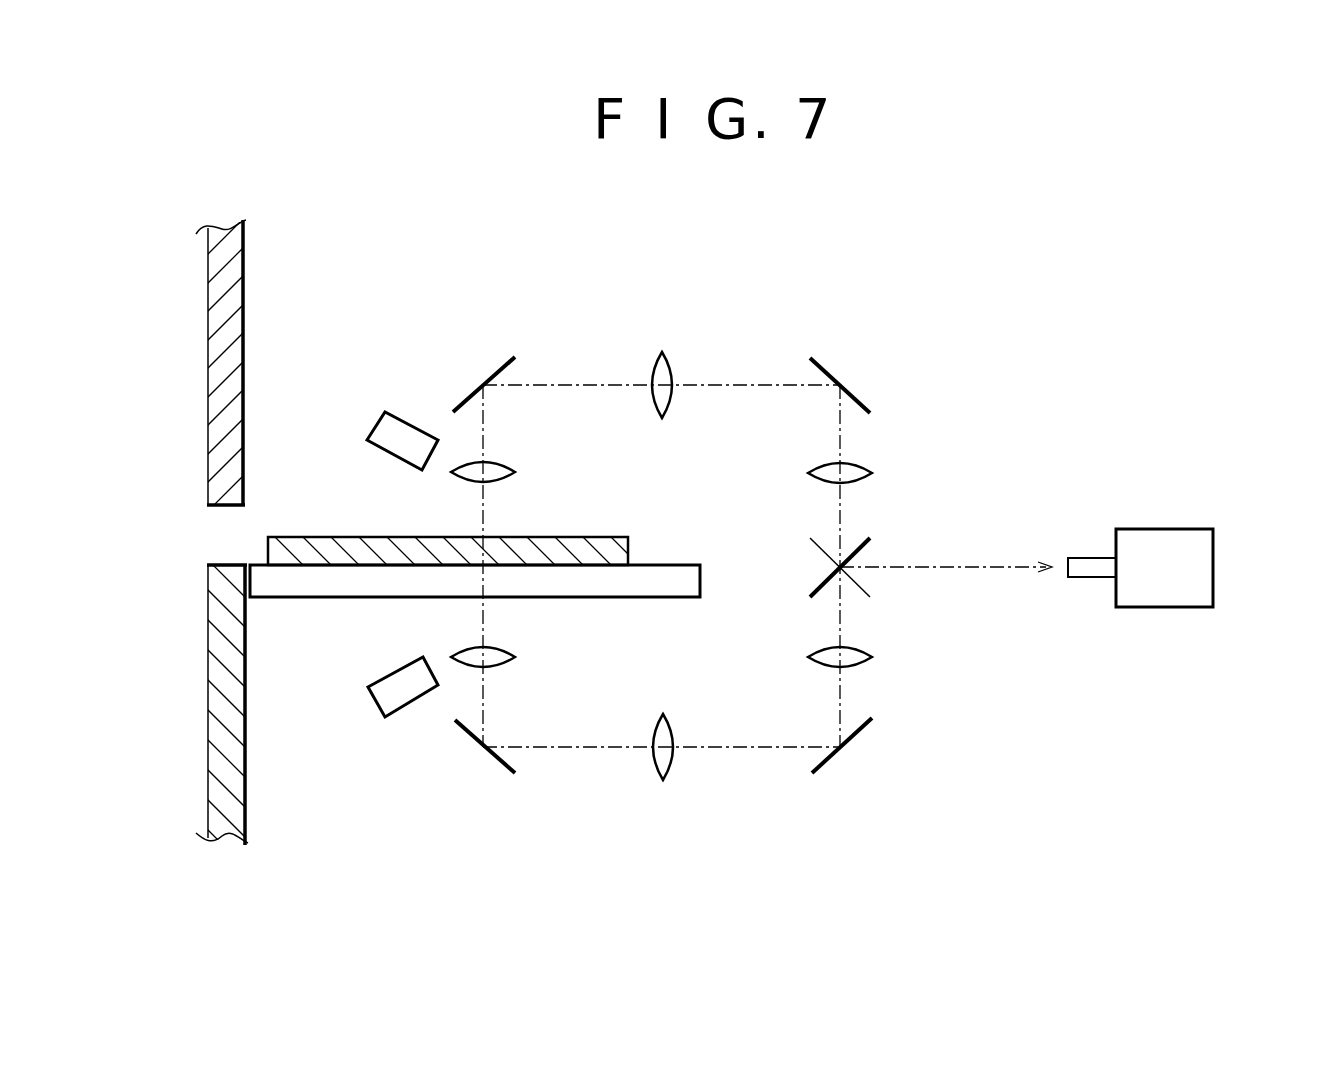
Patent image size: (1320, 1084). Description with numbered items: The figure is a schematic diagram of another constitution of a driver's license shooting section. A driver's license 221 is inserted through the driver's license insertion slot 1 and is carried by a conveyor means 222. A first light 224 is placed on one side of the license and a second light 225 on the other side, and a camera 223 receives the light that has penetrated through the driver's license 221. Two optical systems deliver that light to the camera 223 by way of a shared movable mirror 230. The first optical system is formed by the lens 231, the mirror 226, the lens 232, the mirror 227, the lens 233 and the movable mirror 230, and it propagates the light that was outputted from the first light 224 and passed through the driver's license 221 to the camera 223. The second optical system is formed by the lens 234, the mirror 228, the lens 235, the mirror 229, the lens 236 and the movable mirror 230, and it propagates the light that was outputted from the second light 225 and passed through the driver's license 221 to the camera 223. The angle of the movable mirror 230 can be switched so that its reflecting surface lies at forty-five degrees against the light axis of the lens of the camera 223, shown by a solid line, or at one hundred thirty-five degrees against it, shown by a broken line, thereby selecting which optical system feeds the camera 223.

The driver's license insertion slot 1 is at (223, 542).
The driver's license 221 is at (553, 535).
The conveyor means 222 is at (668, 562).
The camera 223 is at (1165, 528).
The first light 224 is at (383, 716).
The second light 225 is at (373, 424).
The mirror 226 is at (486, 373).
The mirror 227 is at (830, 374).
The mirror 228 is at (498, 764).
The mirror 229 is at (826, 764).
The movable mirror 230 is at (866, 536).
The lens 231 is at (514, 468).
The lens 232 is at (672, 362).
The lens 233 is at (873, 470).
The lens 234 is at (515, 660).
The lens 235 is at (666, 778).
The lens 236 is at (873, 654).